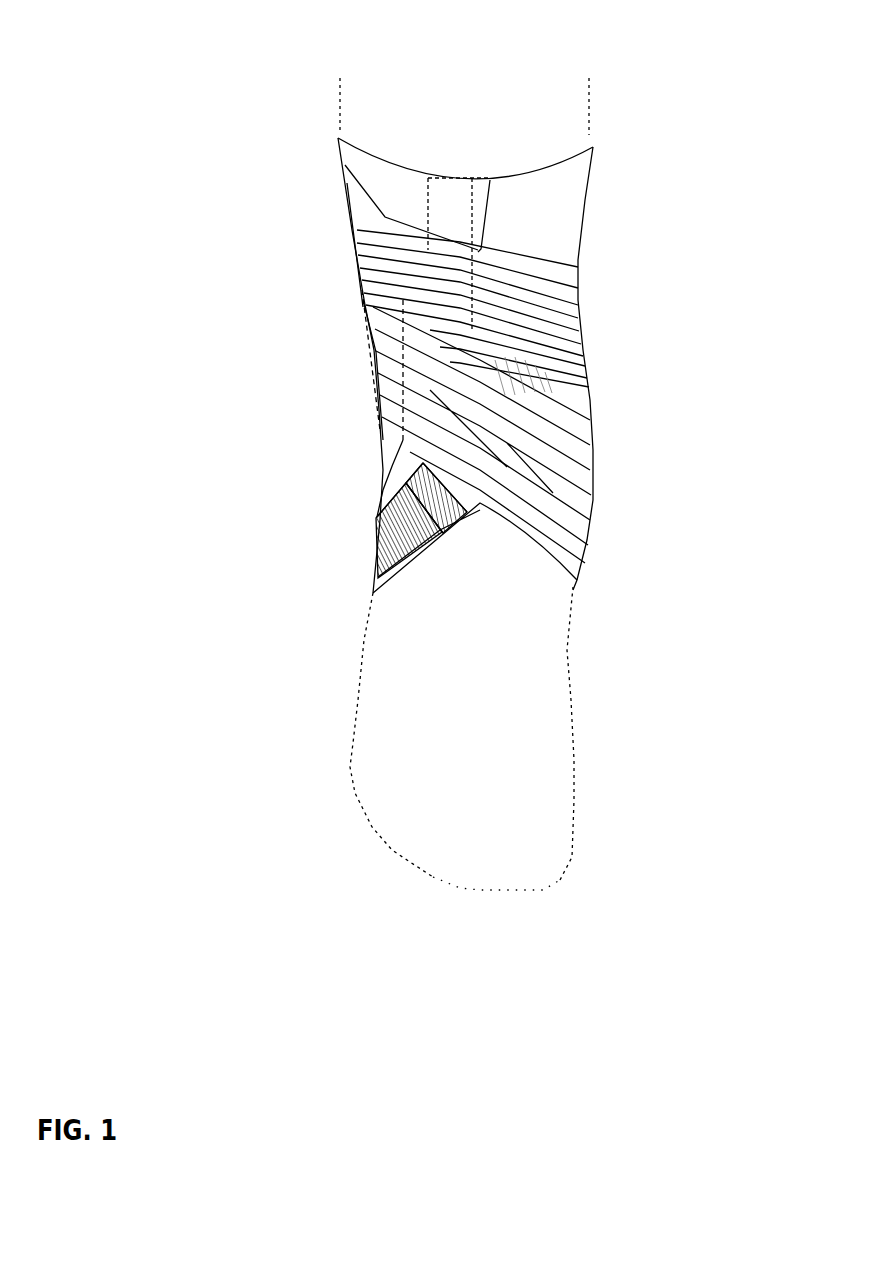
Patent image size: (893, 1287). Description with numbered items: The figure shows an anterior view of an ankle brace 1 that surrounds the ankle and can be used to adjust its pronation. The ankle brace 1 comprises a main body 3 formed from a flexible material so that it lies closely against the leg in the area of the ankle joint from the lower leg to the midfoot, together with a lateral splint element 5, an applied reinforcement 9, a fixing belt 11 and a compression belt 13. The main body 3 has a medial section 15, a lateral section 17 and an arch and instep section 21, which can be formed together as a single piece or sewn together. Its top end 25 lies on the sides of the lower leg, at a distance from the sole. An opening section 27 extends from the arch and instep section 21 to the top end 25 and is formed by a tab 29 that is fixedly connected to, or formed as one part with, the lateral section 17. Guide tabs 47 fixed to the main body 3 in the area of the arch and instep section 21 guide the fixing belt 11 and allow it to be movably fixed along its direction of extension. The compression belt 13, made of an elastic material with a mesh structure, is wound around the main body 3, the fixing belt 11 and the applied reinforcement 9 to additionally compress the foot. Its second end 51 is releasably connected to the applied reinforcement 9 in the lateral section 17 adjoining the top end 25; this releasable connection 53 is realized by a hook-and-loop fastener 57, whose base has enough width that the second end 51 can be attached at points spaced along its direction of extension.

The ankle brace 1 is at (492, 606).
The main body 3 is at (548, 217).
The lateral splint element 5 is at (383, 437).
The applied reinforcement 9 is at (392, 460).
The fixing belt 11 is at (397, 533).
The compression belt 13 is at (495, 423).
The medial section 15 is at (570, 302).
The lateral section 17 is at (382, 352).
The arch and instep section 21 is at (485, 456).
The top end 25 is at (577, 160).
The opening section 27 is at (465, 166).
The tab 29 is at (479, 203).
The guide tabs 47 is at (435, 498).
The second end 51 is at (289, 215).
The releasable connection 53 is at (289, 215).
The hook-and-loop fastener 57 is at (363, 230).